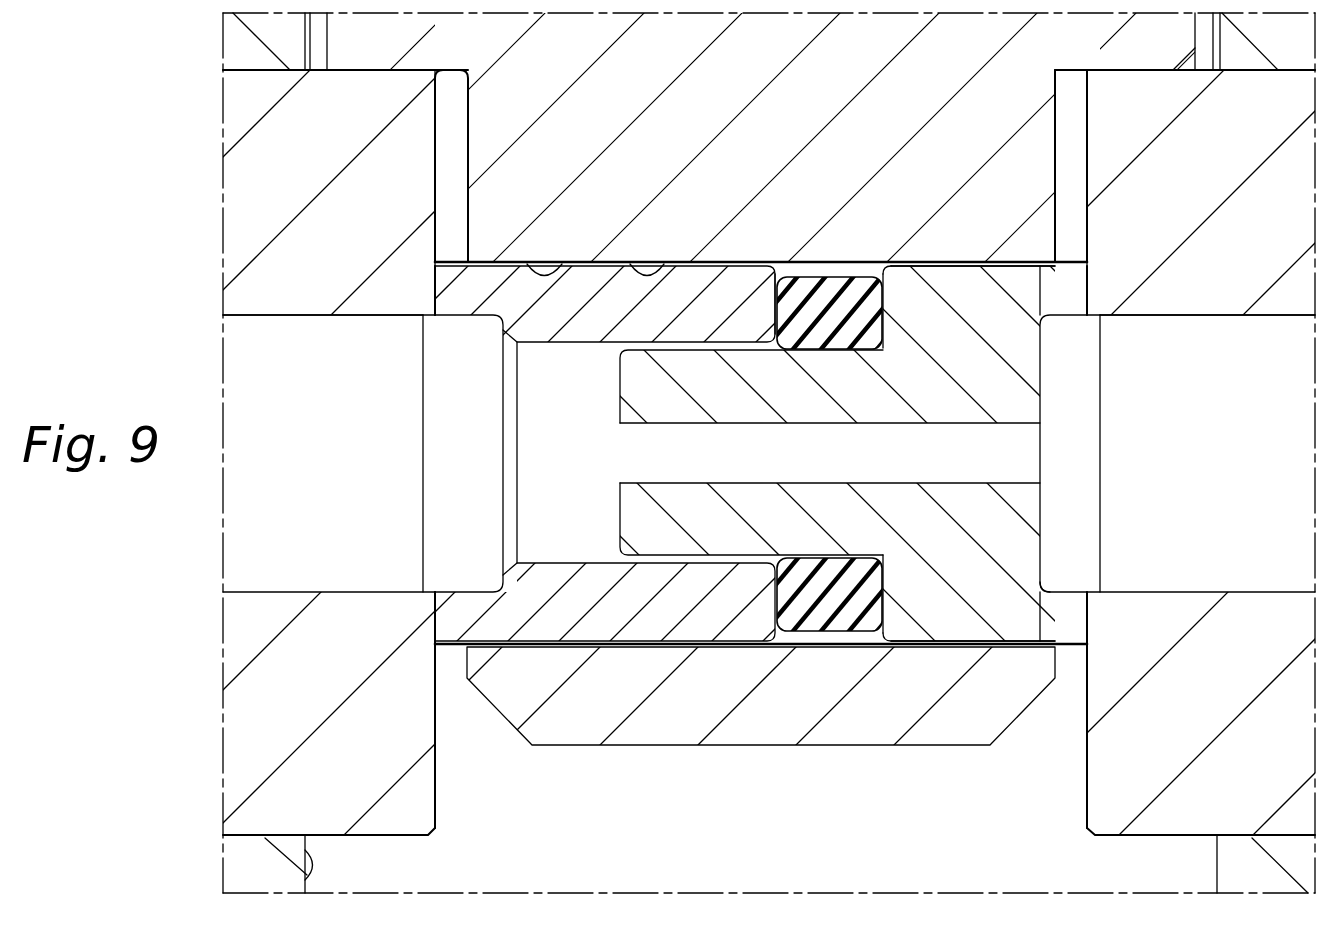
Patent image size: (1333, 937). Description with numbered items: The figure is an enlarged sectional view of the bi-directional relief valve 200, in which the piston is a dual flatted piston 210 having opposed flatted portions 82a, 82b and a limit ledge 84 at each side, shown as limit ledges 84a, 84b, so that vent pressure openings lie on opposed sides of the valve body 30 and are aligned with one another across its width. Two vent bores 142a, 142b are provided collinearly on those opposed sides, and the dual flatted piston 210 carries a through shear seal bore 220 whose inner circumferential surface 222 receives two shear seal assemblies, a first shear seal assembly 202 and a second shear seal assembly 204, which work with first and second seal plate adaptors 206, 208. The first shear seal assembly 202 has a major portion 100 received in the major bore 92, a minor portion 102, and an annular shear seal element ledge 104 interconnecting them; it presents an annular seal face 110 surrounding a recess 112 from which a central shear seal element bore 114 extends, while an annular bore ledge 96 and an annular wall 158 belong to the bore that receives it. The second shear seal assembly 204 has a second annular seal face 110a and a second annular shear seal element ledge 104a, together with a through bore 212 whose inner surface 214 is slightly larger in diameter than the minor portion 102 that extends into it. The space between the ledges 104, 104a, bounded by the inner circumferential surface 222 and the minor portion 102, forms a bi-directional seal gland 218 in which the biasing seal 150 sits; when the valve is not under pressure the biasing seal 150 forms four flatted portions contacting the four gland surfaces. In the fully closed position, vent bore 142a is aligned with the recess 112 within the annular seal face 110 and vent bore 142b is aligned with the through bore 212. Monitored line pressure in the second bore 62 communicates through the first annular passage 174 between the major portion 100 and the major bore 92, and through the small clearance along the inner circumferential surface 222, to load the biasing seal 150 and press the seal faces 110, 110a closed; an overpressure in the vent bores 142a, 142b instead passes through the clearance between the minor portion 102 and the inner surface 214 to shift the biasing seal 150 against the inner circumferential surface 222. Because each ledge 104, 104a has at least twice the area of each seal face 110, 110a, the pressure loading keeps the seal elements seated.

The bi-directional relief valve 200 is at (140, 112).
The dual flatted piston 210 is at (792, 133).
The limit ledge 84b is at (358, 72).
The limit ledge 84a is at (1128, 72).
The flatted portion 82b is at (468, 160).
The flatted portion 82a is at (1055, 138).
The second annular seal face 110a is at (435, 280).
The annular seal face 110 is at (1088, 283).
The inner circumferential surface 222 is at (565, 262).
The through shear seal bore 220 is at (648, 262).
The second annular shear seal element ledge 104a is at (788, 262).
The annular shear seal element ledge 104 is at (880, 268).
The biasing seal 150 is at (824, 300).
The bi-directional seal gland 218 is at (843, 640).
The first annular passage 174 is at (953, 262).
The major bore 92 is at (977, 267).
The vent bore 142b is at (310, 465).
The vent bore 142a is at (1278, 465).
The inner surface 214 is at (560, 347).
The through bore 212 is at (545, 408).
The minor portion 102 is at (632, 388).
The central shear seal element bore 114 is at (632, 455).
The annular bore ledge 96 is at (635, 517).
The recess 112 is at (1070, 465).
The annular wall 158 is at (1042, 567).
The second shear seal assembly 204 is at (710, 617).
The major portion 100 is at (912, 612).
The first shear seal assembly 202 is at (1010, 617).
The limit ledge 84 is at (638, 747).
The second seal plate adaptor 208 is at (382, 828).
The first seal plate adaptor 206 is at (1172, 828).
The second bore 62 is at (305, 868).
The base 30 is at (782, 858).